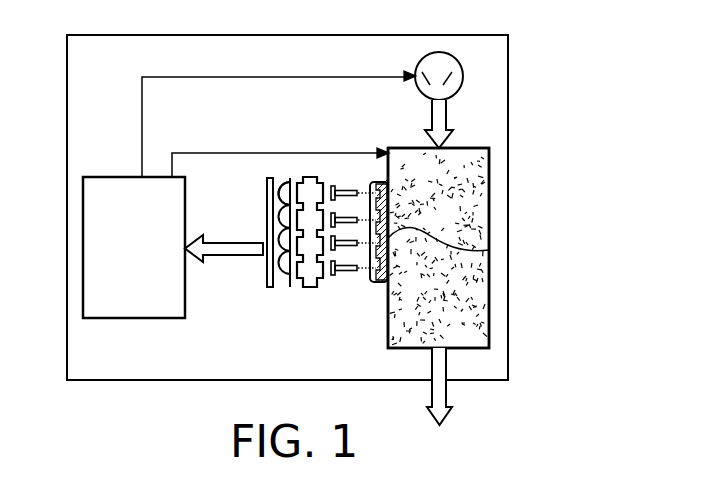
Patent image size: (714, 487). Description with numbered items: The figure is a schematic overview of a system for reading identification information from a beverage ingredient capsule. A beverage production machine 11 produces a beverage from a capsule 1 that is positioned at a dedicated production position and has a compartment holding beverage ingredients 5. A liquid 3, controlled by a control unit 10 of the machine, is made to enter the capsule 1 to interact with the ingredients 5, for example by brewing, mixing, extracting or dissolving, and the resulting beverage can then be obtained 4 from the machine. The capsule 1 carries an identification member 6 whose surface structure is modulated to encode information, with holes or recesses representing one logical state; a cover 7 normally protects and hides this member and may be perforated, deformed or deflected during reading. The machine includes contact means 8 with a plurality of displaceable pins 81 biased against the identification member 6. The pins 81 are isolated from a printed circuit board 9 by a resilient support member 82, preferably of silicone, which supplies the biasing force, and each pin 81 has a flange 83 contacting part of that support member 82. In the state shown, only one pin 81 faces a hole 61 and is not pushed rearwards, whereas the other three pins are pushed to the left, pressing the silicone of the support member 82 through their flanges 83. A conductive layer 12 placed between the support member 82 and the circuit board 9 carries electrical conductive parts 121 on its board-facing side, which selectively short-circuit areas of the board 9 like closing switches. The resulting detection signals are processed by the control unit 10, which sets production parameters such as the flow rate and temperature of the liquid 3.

The capsule 1 is at (489, 332).
The liquid 3 is at (446, 112).
The obtained beverage 4 is at (447, 395).
The beverage ingredients 5 is at (489, 158).
The identification member 6 is at (383, 284).
The cover 7 is at (372, 184).
The contact means 8 is at (335, 276).
The printed circuit board 9 is at (267, 188).
The control unit 10 is at (83, 192).
The beverage production machine 11 is at (508, 47).
The conductive layer 12 is at (290, 290).
The hole 61 is at (489, 250).
The displaceable pins 81 is at (350, 283).
The resilient support member 82 is at (314, 288).
The flange 83 is at (335, 249).
The electrical conductive parts 121 is at (283, 180).